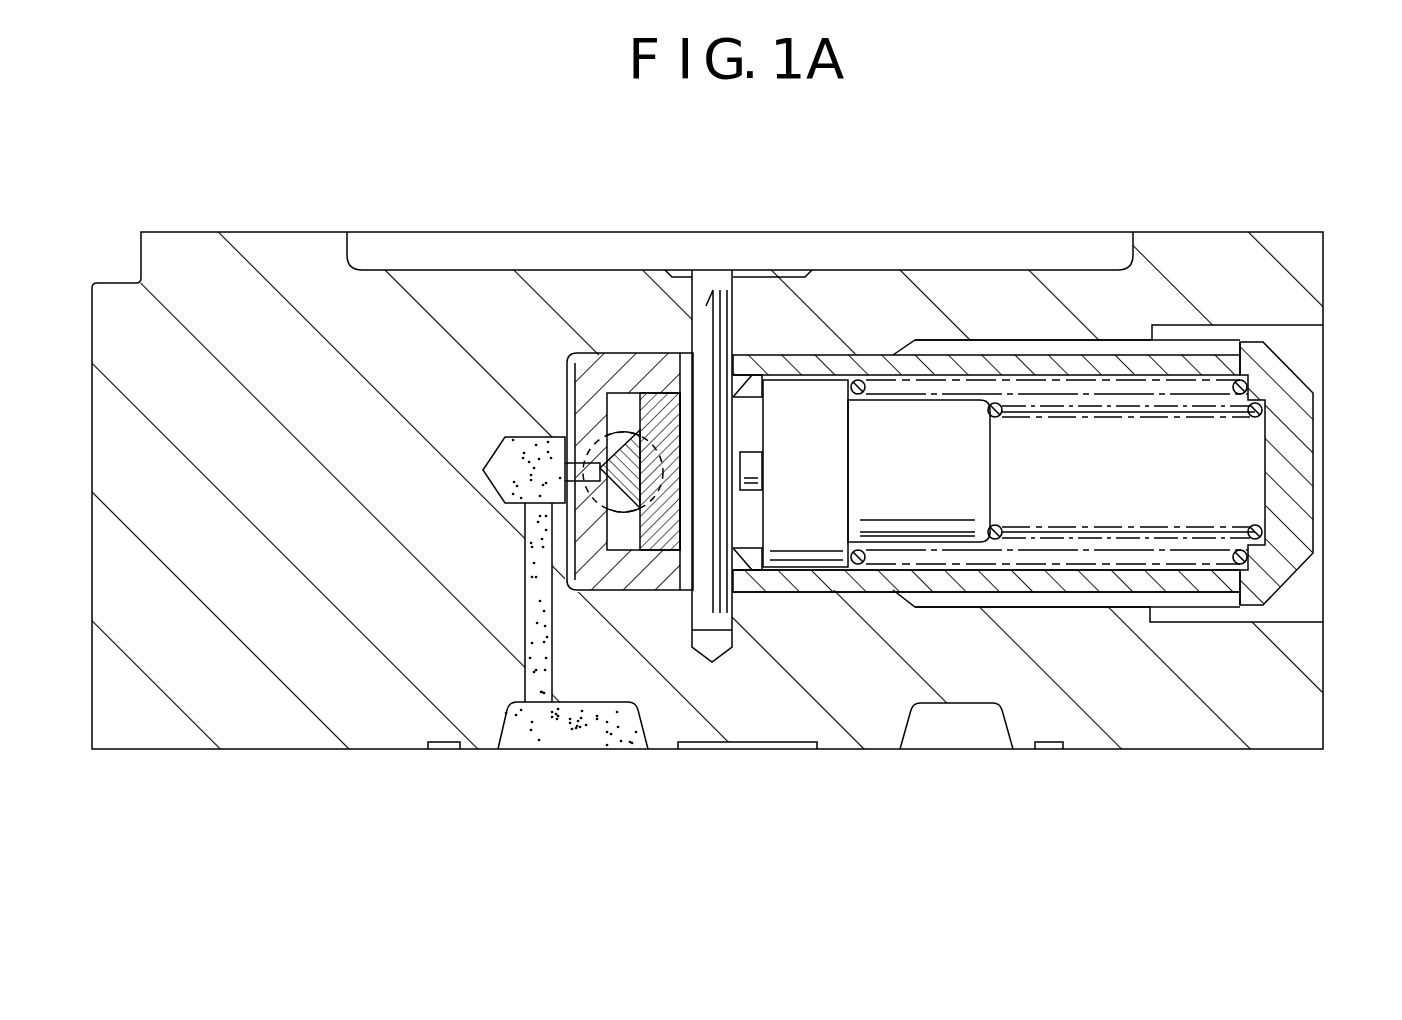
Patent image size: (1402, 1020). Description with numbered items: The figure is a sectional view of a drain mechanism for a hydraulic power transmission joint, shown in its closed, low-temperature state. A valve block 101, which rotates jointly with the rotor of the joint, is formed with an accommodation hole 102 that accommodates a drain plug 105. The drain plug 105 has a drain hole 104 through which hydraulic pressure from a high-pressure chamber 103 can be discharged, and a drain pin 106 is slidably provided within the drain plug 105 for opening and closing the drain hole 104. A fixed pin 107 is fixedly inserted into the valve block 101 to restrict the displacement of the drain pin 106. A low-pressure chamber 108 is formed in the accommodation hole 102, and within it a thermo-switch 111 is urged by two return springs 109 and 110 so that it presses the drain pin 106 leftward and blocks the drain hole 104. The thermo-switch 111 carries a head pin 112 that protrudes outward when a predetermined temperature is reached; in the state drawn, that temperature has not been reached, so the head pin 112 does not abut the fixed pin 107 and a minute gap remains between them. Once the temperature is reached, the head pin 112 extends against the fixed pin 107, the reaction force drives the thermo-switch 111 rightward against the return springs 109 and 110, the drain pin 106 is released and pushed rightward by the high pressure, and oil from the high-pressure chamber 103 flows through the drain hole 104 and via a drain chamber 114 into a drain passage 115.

The valve block 101 is at (242, 702).
The accommodation hole 102 is at (878, 580).
The high-pressure chamber 103 is at (520, 497).
The drain hole 104 is at (562, 466).
The drain plug 105 is at (663, 577).
The drain pin 106 is at (659, 405).
The fixed pin 107 is at (713, 303).
The low-pressure chamber 108 is at (1160, 443).
The return spring 109 is at (1313, 445).
The return spring 110 is at (1250, 380).
The thermo-switch 111 is at (929, 453).
The head pin 112 is at (750, 470).
The drain chamber 114 is at (625, 535).
The drain passage 115 is at (627, 432).